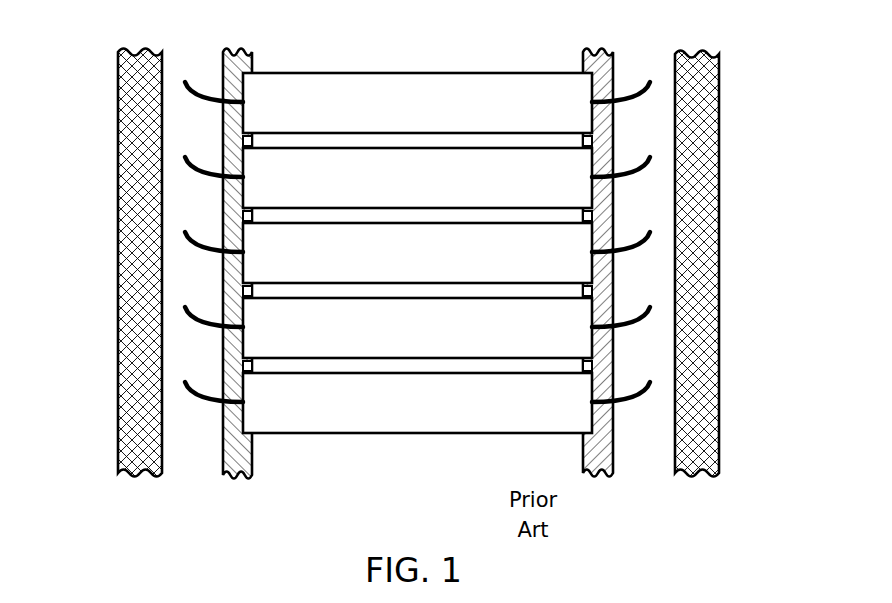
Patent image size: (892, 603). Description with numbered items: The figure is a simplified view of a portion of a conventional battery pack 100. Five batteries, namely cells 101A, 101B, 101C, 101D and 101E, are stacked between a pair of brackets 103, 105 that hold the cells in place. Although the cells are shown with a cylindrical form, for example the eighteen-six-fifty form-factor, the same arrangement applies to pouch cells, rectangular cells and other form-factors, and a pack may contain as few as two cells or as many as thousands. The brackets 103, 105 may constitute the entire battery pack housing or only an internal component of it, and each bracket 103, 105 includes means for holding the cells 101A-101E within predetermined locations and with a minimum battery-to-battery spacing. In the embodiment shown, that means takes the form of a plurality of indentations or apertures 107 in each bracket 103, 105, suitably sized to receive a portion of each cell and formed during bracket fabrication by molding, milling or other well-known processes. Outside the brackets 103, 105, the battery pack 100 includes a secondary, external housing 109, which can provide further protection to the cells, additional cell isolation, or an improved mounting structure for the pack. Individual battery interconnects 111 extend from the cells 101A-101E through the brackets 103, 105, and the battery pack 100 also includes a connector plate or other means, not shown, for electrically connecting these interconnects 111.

The battery pack 100 is at (436, 262).
The battery cell 101A is at (447, 113).
The battery cell 101B is at (447, 188).
The battery cell 101C is at (447, 263).
The battery cell 101D is at (447, 338).
The battery cell 101E is at (447, 413).
The bracket 103 is at (236, 52).
The bracket 105 is at (598, 53).
The indentations or apertures 107 is at (232, 115).
The secondary external housing 109 is at (130, 118).
The battery interconnects 111 is at (198, 76).